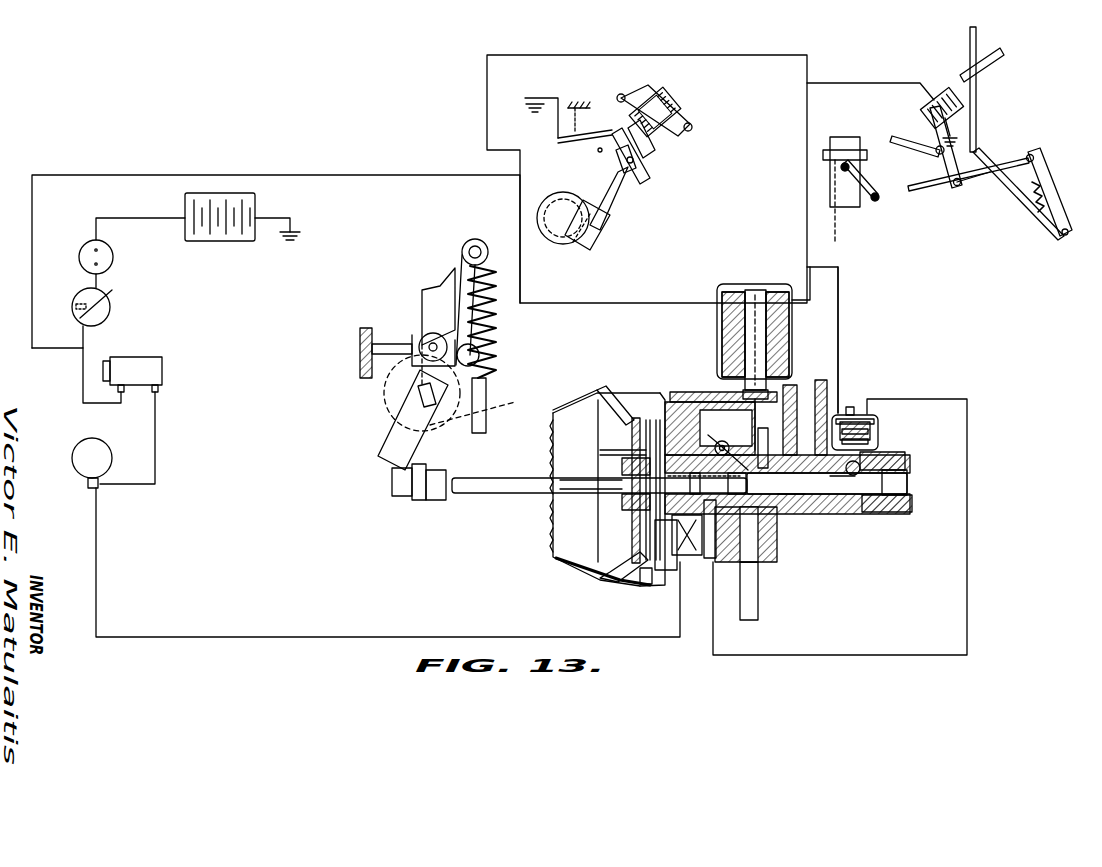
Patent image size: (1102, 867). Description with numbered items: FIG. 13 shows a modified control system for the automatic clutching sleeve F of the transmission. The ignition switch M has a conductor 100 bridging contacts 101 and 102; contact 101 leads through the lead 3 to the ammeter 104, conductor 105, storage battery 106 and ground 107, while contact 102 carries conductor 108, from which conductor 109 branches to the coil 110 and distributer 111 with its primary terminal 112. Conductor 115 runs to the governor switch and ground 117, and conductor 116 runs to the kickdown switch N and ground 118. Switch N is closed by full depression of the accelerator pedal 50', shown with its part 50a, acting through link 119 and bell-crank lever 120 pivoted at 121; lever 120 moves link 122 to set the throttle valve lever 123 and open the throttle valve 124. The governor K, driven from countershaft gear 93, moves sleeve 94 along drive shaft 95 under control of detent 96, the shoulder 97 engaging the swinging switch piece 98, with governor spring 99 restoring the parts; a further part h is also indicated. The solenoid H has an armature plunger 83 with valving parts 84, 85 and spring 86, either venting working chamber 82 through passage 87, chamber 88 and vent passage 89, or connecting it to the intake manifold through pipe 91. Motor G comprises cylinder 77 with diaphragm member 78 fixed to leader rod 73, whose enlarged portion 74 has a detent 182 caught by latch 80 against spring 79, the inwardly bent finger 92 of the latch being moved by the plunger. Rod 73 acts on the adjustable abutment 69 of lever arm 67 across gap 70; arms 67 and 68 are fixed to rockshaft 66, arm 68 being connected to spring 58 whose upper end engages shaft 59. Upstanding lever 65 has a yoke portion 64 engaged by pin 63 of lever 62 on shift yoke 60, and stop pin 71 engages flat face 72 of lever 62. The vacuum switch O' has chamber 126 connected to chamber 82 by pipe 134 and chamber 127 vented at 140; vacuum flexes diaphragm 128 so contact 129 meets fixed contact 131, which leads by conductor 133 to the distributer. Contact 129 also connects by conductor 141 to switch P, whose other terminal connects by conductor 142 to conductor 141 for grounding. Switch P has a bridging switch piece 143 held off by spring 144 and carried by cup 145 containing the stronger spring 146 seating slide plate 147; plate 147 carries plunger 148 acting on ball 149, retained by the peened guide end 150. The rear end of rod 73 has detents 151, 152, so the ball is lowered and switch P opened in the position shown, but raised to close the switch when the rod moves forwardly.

The conductor 3 is at (32, 275).
The ignition switch M is at (76, 290).
The conductor 100 is at (110, 300).
The contact 101 is at (107, 293).
The contact 102 is at (80, 314).
The ammeter 104 is at (113, 252).
The conductor 105 is at (158, 216).
The storage battery 106 is at (218, 242).
The ground 107 is at (290, 245).
The conductor 108 is at (98, 320).
The conductor 109 is at (82, 378).
The coil 110 is at (160, 366).
The distributer 111 is at (78, 446).
The primary terminal 112 is at (86, 488).
The conductor 115 is at (694, 54).
The conductor 116 is at (896, 80).
The ground 117 is at (542, 108).
The ground 118 is at (964, 138).
The link 119 is at (973, 183).
The bell-crank lever 120 is at (900, 122).
The pivot 121 is at (940, 156).
The link 122 is at (911, 190).
The throttle valve lever 123 is at (866, 202).
The throttle valve 124 is at (842, 189).
The accelerator pedal 50' is at (1053, 189).
The pedal spring 50a is at (1040, 220).
The kickdown switch N is at (938, 94).
The governor K is at (679, 108).
The switch piece 98 is at (602, 121).
The governor spring 99 is at (689, 106).
The sleeve 94 is at (666, 130).
The shoulder 97 is at (656, 154).
The detent 96 is at (638, 174).
The drive shaft 95 is at (614, 198).
The countershaft gear 93 is at (552, 242).
The pivot h is at (600, 154).
The conductor 141 is at (807, 163).
The conductor 142 is at (846, 306).
The spring 86 is at (756, 288).
The armature plunger 83 is at (720, 312).
The valve 84 is at (750, 370).
The chamber 88 is at (700, 402).
The vent passage 89 is at (686, 392).
The working chamber 82 is at (648, 418).
The spring 79 is at (634, 412).
The cylinder 77 is at (592, 400).
The passage 87 is at (632, 452).
The solenoid H is at (792, 312).
The interrupter switch P is at (852, 415).
The spring 144 is at (864, 410).
The bridging conductor switch piece 143 is at (877, 422).
The cup 145 is at (876, 431).
The spring 146 is at (877, 444).
The plunger 148 is at (905, 461).
The ball 149 is at (907, 478).
The detent 152 is at (890, 514).
The valve 85 is at (787, 484).
The finger 92 is at (728, 447).
The latch 80 is at (742, 451).
The chamber 127 is at (727, 482).
The chamber 126 is at (692, 486).
The detent 151 is at (761, 505).
The vent 140 is at (714, 560).
The detent 182 is at (782, 496).
The peened guide end 150 is at (833, 503).
The switch contact 129 is at (746, 534).
The pipe 91 is at (758, 592).
The vacuum switch O' is at (693, 561).
The diaphragm 128 is at (682, 572).
The switch contact 131 is at (656, 584).
The pipe 134 is at (636, 570).
The enlarged central portion 74 is at (620, 494).
The differential fluid pressure operated member 78 is at (620, 562).
The motor G is at (558, 562).
The reciprocatory rod 73 is at (492, 494).
The gap 70 is at (442, 502).
The adjustable abutment 69 is at (412, 500).
The spring 58 is at (490, 332).
The transverse shaft 59 is at (478, 242).
The shift yoke 60 is at (463, 250).
The lever 62 is at (436, 328).
The lateral pin 63 is at (432, 330).
The yoke portion 64 is at (418, 336).
The flat face 72 is at (404, 342).
The stop pin 71 is at (365, 374).
The upstanding lever 65 is at (398, 396).
The lever arm 67 is at (388, 434).
The rockshaft 66 is at (428, 410).
The lever arm 68 is at (478, 420).
The automatic clutching sleeve F is at (472, 411).
The conductor 133 is at (325, 637).
The slide plate 147 is at (837, 481).